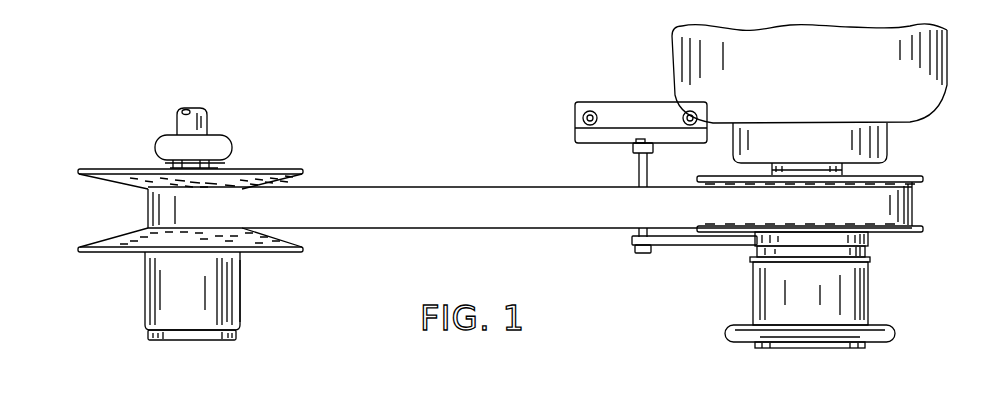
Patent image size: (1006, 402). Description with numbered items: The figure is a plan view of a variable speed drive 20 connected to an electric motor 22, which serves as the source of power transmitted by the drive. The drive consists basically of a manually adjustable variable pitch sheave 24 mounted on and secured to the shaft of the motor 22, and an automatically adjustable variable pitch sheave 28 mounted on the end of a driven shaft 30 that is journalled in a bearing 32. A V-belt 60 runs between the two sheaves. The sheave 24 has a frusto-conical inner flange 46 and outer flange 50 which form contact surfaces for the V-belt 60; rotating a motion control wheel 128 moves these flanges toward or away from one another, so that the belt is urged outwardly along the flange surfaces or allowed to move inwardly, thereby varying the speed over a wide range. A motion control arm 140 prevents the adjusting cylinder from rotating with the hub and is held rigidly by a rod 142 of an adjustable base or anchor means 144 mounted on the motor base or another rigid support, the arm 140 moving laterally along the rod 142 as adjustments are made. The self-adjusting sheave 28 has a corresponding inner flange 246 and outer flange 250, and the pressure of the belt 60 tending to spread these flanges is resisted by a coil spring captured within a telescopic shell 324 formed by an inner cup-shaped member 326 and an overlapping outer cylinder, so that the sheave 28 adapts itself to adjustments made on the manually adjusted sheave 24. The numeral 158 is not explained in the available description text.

The variable speed drive 20 is at (413, 173).
The electric motor 22 is at (830, 87).
The variable pitch sheave 24 is at (832, 268).
The variable pitch sheave 28 is at (175, 267).
The driven shaft 30 is at (183, 125).
The bearing 32 is at (197, 136).
The inner flange 46 is at (915, 178).
The outer flange 50 is at (918, 234).
The V-belt 60 is at (520, 217).
The motion control wheel 128 is at (812, 341).
The motion control arm 140 is at (698, 246).
The rod 142 is at (641, 172).
The adjustable base or anchor means 144 is at (657, 89).
The drum 158 is at (765, 297).
The inner flange 246 is at (112, 177).
The outer flange 250 is at (94, 248).
The telescopic shell 324 is at (238, 308).
The cup-shaped member 326 is at (236, 338).